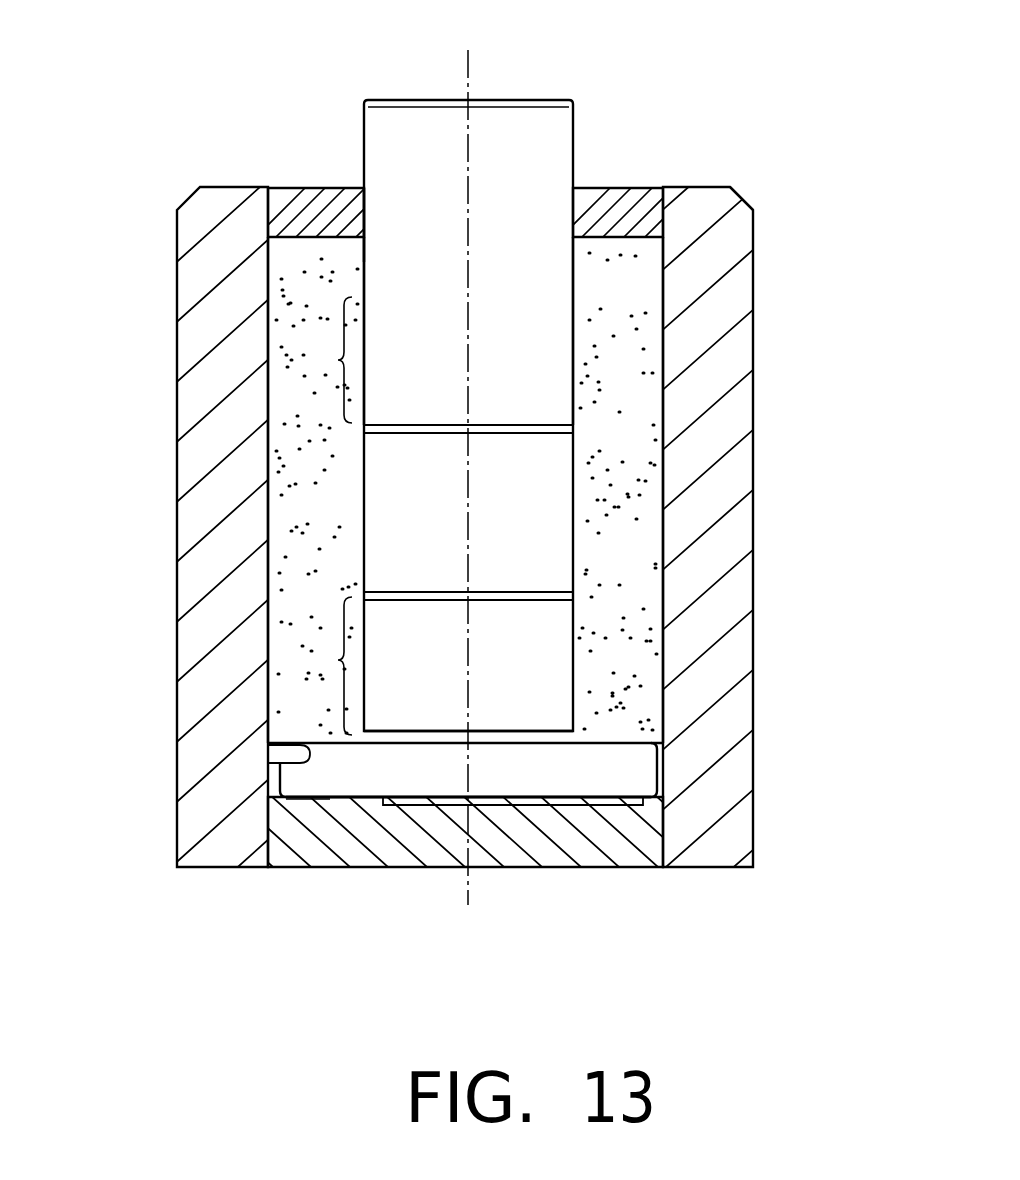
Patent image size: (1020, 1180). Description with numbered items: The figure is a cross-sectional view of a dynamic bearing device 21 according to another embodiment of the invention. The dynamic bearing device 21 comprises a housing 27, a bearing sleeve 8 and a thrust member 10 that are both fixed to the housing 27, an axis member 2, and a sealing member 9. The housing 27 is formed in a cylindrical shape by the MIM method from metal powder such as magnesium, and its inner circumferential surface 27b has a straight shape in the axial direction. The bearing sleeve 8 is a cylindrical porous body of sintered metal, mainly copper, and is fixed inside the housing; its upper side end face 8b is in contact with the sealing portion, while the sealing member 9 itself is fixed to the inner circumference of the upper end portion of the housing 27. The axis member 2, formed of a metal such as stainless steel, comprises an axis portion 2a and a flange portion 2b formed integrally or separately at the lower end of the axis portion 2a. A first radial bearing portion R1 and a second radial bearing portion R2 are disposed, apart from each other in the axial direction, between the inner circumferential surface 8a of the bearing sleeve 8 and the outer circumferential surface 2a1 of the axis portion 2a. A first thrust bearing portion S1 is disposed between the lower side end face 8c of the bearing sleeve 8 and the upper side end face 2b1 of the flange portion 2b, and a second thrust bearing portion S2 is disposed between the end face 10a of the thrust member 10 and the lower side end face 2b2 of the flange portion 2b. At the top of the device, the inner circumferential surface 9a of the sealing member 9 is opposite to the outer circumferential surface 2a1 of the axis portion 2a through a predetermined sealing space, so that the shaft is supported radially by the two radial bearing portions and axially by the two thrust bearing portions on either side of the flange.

The axis member 2 is at (578, 128).
The axis portion 2a is at (512, 115).
The outer circumferential surface of the axis portion 2a1 is at (362, 260).
The flange portion 2b is at (647, 768).
The upper side end face of the flange portion 2b1 is at (620, 743).
The lower side end face of the flange portion 2b2 is at (633, 818).
The bearing sleeve 8 is at (646, 284).
The inner circumferential surface of the bearing sleeve 8a is at (568, 340).
The upper side end face of the bearing sleeve 8b is at (725, 198).
The lower side end face of the bearing sleeve 8c is at (300, 757).
The sealing member 9 is at (645, 191).
The inner circumferential surface of the sealing member 9a is at (364, 217).
The thrust member 10 is at (587, 858).
The end face of the thrust member 10a is at (366, 797).
The dynamic bearing device 21 is at (775, 153).
The housing 27 is at (181, 207).
The inner circumferential surface of the housing 27b is at (280, 312).
The first radial bearing portion R1 is at (331, 362).
The second radial bearing portion R2 is at (329, 655).
The first thrust bearing portion S1 is at (320, 732).
The second thrust bearing portion S2 is at (308, 805).